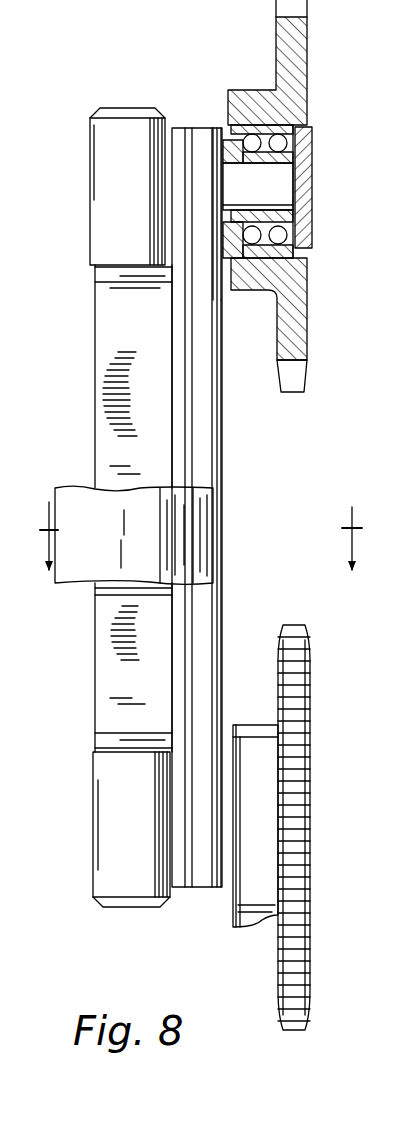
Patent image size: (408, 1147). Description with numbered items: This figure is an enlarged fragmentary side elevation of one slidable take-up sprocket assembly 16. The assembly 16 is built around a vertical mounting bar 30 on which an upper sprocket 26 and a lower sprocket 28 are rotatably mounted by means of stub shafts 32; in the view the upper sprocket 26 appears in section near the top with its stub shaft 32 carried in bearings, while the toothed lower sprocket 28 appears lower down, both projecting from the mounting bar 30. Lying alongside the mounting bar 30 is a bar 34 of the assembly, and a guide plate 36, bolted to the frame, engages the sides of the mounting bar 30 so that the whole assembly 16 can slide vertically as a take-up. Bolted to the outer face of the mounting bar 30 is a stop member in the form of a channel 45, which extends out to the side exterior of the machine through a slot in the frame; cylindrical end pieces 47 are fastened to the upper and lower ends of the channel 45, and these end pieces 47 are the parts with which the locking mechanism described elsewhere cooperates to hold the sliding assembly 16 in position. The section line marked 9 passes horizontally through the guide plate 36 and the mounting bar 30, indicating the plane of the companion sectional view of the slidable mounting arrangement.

The section line 9- 9 is at (100, 546).
The take-up sprocket assembly 16 is at (242, 510).
The upper sprocket 26 is at (278, 38).
The lower sprocket 28 is at (300, 777).
The mounting bar 30 is at (220, 618).
The stub shaft 32 is at (332, 162).
The support bar 34 is at (205, 466).
The guide plate 36 is at (215, 545).
The channel 45 is at (142, 412).
The cylindrical end piece 47 is at (122, 138).